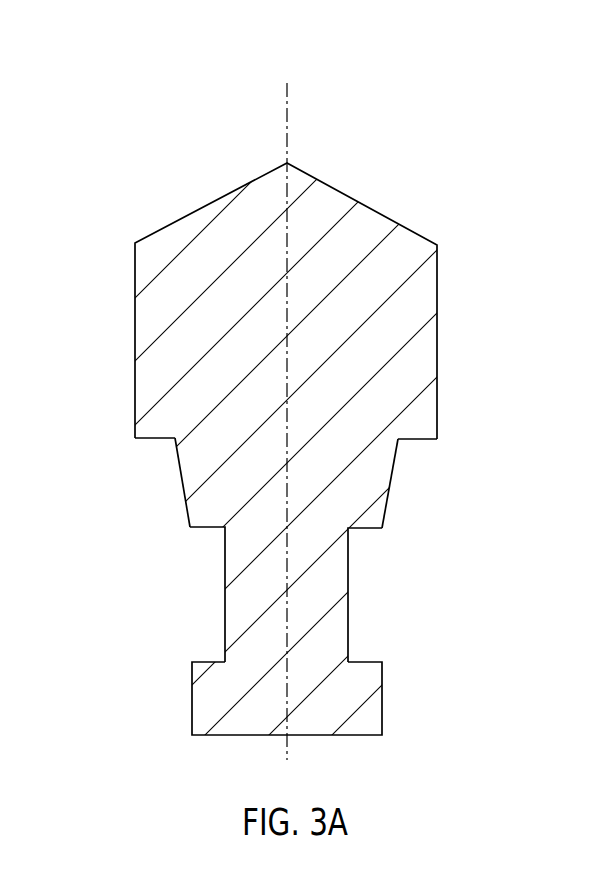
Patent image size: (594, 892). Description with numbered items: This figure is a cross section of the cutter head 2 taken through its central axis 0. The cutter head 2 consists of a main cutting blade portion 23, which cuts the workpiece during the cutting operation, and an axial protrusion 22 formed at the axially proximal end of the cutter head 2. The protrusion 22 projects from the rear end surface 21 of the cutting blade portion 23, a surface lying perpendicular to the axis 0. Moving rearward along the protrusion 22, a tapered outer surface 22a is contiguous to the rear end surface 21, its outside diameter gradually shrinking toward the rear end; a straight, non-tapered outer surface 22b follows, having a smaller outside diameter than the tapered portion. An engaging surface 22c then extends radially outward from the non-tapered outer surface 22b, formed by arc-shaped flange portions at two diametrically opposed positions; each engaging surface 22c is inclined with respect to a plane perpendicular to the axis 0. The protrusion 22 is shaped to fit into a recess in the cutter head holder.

The cutter head 2 is at (297, 404).
The axis 0 is at (287, 113).
The cutting blade portion 23 is at (437, 297).
The rear end surface 21 is at (150, 442).
The axial protrusion 22 is at (284, 586).
The tapered outer surface 22a is at (182, 487).
The non-tapered outer surface 22b is at (225, 598).
The engaging surface 22c is at (287, 690).